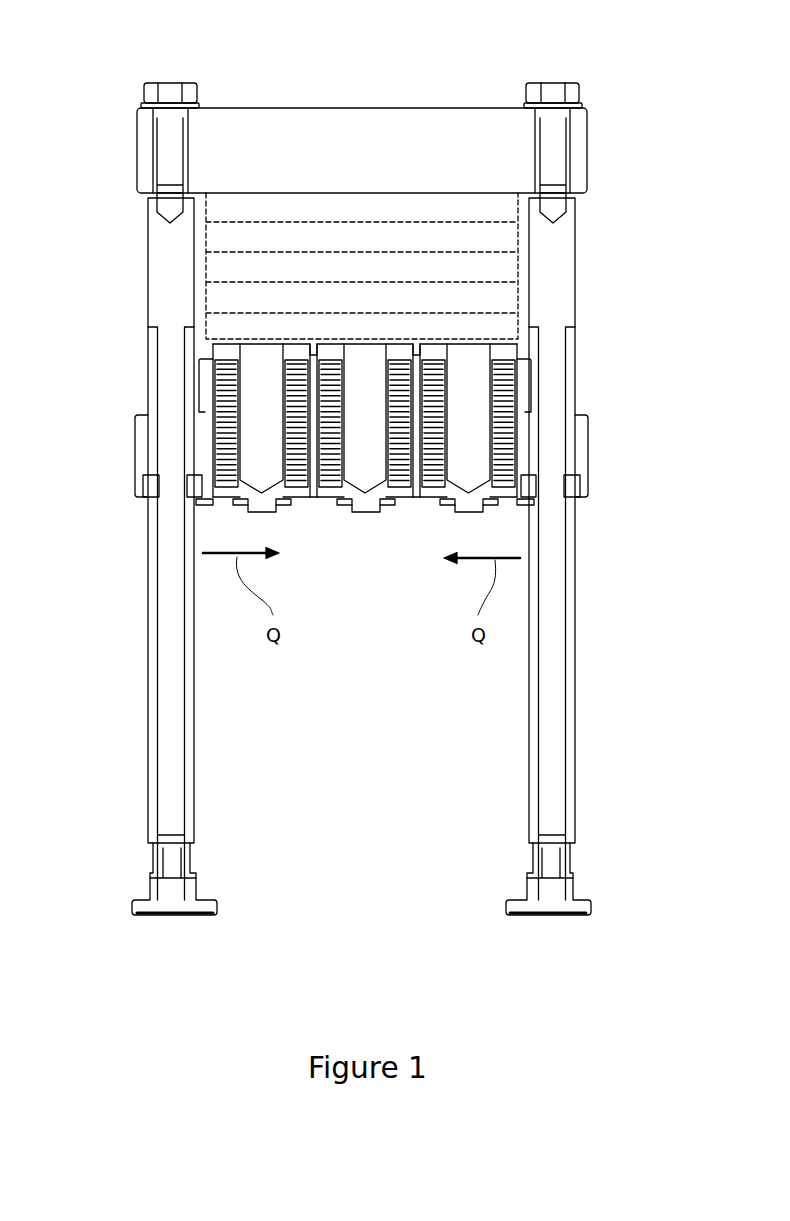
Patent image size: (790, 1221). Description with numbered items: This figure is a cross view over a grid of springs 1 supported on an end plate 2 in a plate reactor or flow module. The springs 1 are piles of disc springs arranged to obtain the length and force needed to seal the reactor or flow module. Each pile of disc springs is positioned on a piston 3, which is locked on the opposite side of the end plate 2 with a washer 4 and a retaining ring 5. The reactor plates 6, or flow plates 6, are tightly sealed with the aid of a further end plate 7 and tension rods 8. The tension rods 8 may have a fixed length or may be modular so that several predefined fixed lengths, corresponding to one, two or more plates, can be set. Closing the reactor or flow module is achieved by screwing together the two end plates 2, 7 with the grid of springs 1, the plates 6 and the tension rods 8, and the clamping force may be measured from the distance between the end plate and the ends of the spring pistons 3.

The springs 1 is at (400, 383).
The end plate 2 is at (513, 487).
The piston 3 is at (228, 353).
The washer 4 is at (226, 507).
The retaining ring 5 is at (343, 507).
The reactor plates 6 is at (272, 264).
The end plate 7 is at (293, 140).
The tension rods 8 is at (565, 260).